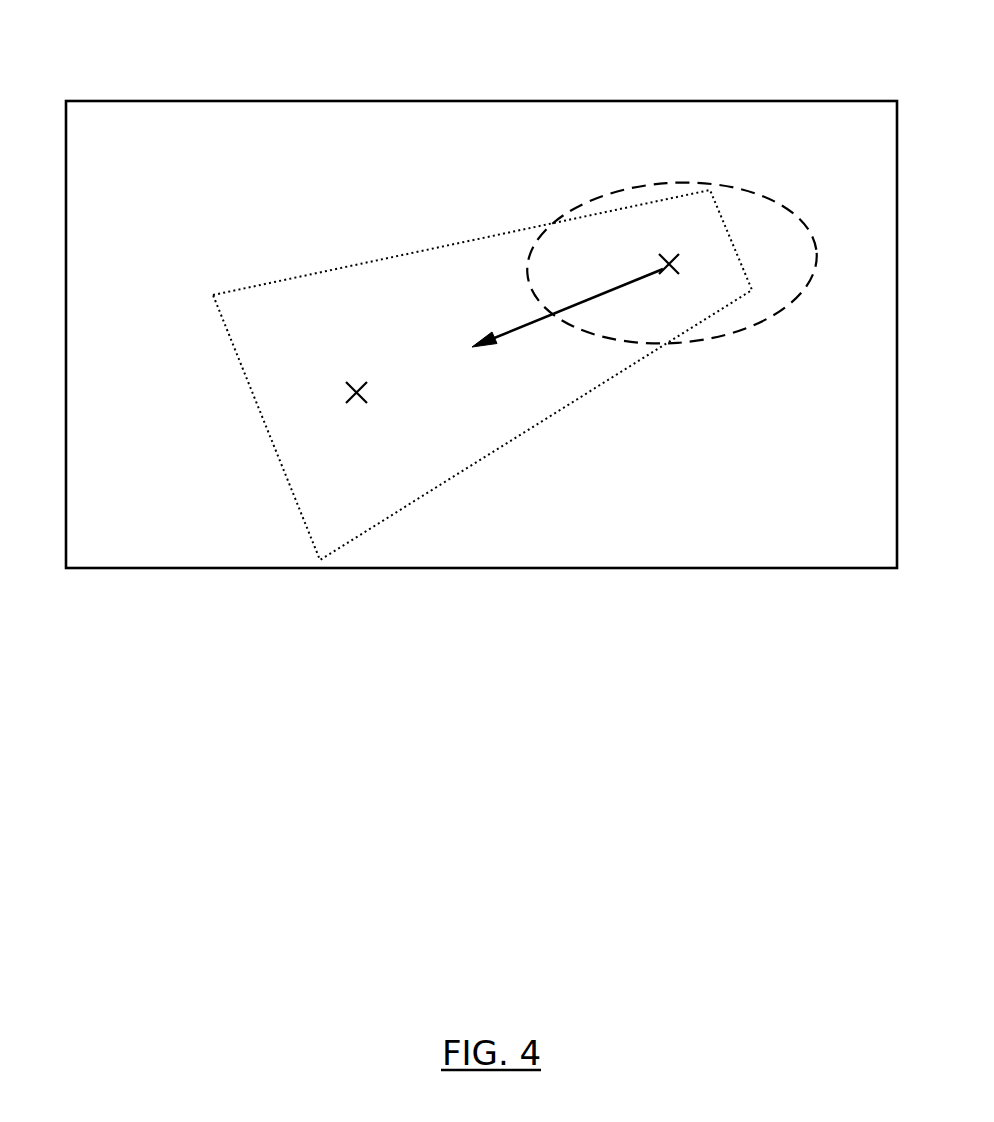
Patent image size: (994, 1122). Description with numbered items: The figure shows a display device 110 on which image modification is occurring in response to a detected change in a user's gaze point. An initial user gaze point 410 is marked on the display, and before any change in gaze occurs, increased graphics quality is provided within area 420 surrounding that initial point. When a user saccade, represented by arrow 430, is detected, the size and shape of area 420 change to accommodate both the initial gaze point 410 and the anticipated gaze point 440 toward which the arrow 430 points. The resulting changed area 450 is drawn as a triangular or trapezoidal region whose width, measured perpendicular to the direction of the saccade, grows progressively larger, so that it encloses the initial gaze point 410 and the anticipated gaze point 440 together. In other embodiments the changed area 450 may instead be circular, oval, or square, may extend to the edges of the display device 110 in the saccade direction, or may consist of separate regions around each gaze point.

The display device 110 is at (138, 102).
The initial user gaze point 410 is at (672, 262).
The area 420 is at (727, 188).
The arrow 430 is at (493, 332).
The anticipated gaze point 440 is at (350, 400).
The changed area 450 is at (322, 270).